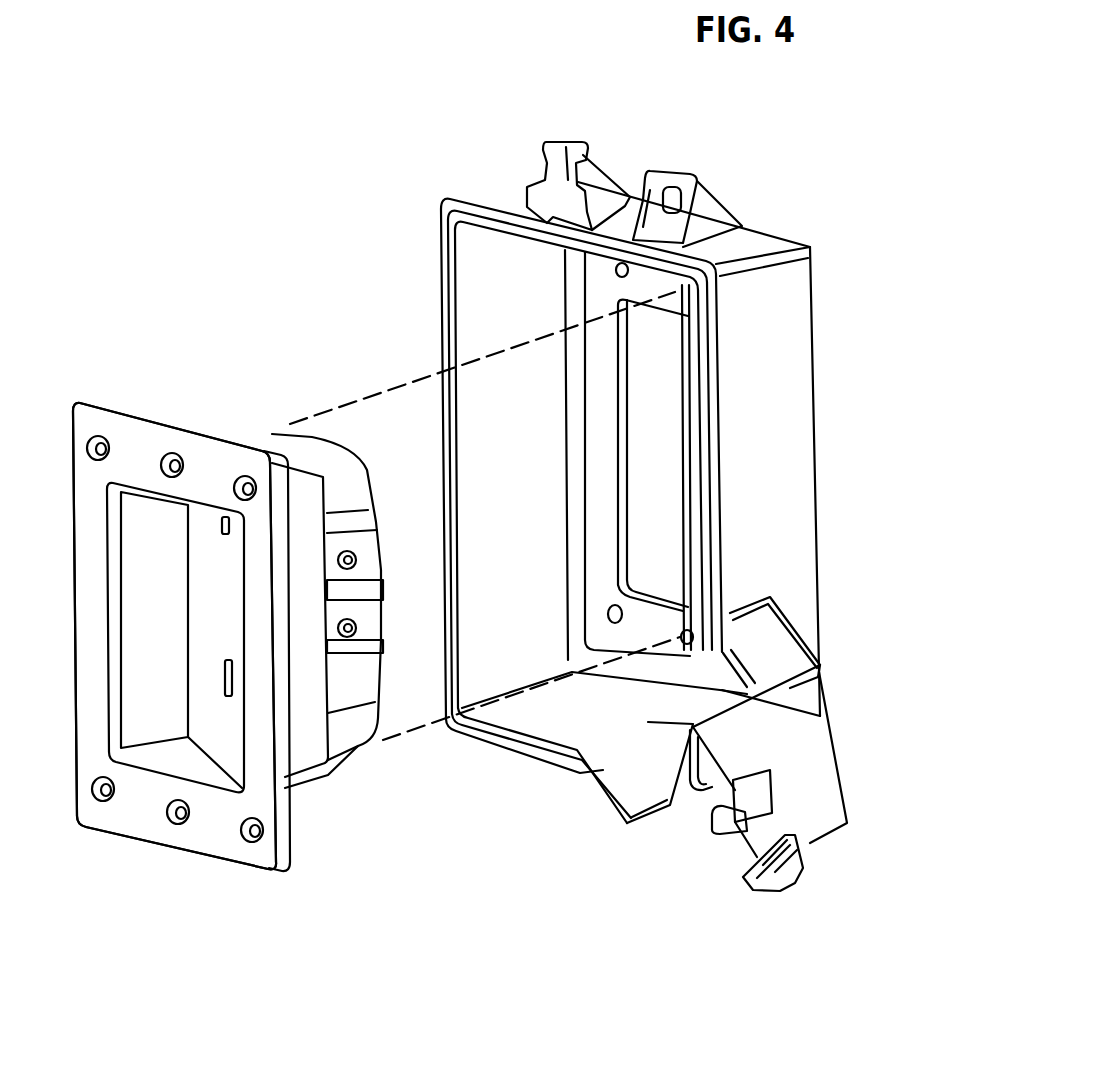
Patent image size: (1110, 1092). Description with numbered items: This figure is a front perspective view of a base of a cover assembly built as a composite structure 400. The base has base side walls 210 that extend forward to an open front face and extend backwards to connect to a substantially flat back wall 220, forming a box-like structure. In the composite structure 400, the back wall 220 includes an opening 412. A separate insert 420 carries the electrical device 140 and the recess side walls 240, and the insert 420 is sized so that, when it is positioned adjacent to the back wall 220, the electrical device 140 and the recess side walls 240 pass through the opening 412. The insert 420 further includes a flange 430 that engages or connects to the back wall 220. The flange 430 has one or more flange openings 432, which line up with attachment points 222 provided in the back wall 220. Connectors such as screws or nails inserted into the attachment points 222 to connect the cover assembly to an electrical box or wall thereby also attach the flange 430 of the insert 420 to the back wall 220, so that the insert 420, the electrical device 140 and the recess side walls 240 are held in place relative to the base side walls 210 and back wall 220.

The composite structure 400 is at (191, 192).
The insert 420 is at (124, 380).
The flange openings 432 is at (246, 482).
The flange 430 is at (231, 492).
The recess side walls 240 is at (175, 614).
The electrical device 140 is at (262, 399).
The base side walls 210 is at (528, 440).
The attachment points 222 is at (613, 276).
The back wall 220 is at (669, 632).
The opening 412 is at (682, 542).